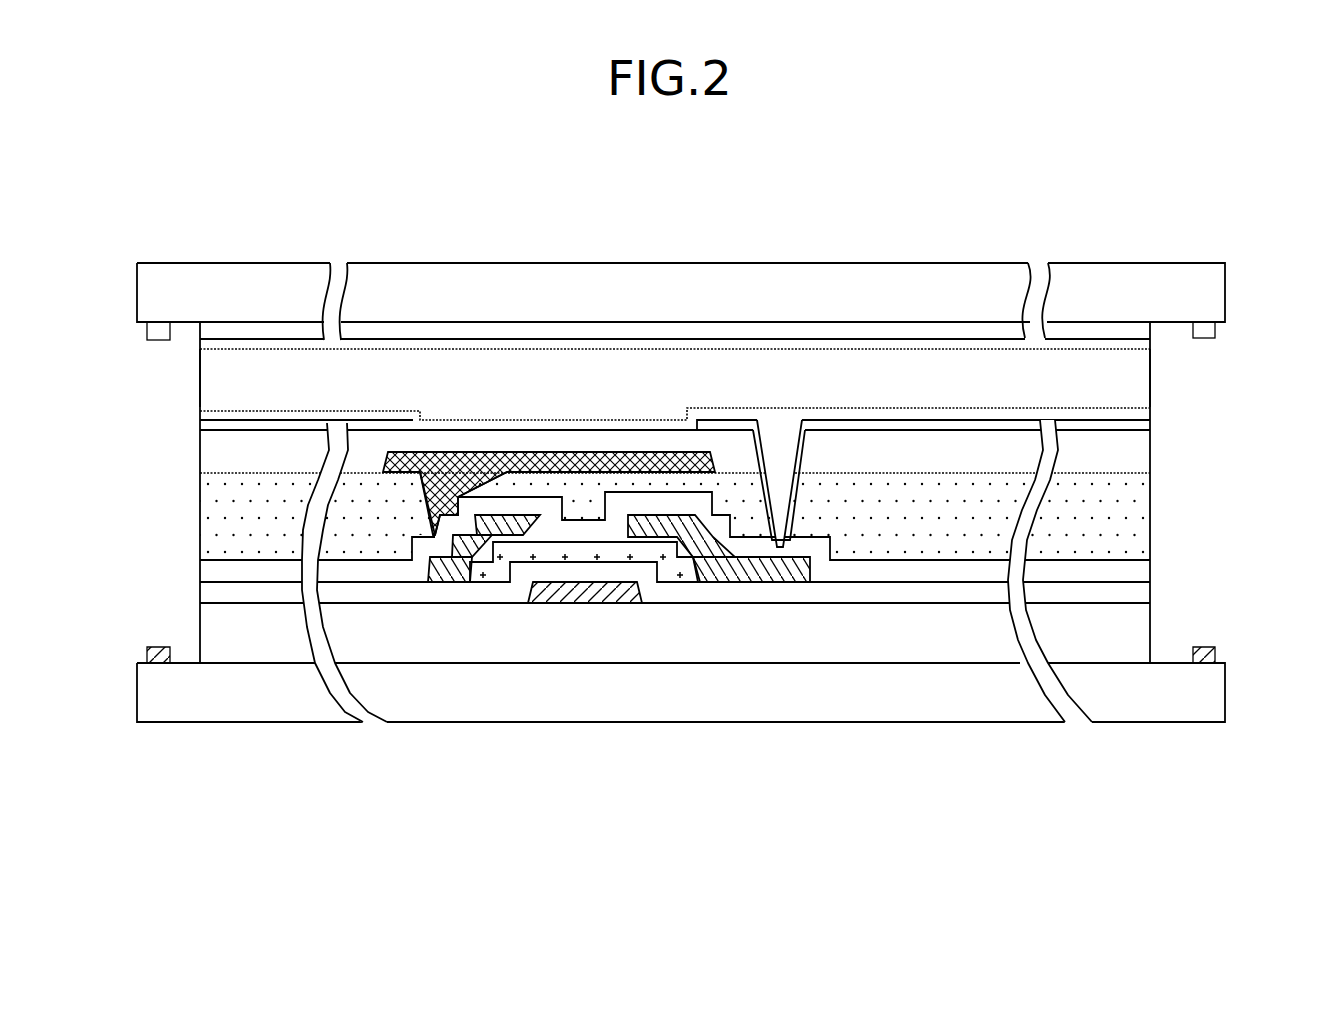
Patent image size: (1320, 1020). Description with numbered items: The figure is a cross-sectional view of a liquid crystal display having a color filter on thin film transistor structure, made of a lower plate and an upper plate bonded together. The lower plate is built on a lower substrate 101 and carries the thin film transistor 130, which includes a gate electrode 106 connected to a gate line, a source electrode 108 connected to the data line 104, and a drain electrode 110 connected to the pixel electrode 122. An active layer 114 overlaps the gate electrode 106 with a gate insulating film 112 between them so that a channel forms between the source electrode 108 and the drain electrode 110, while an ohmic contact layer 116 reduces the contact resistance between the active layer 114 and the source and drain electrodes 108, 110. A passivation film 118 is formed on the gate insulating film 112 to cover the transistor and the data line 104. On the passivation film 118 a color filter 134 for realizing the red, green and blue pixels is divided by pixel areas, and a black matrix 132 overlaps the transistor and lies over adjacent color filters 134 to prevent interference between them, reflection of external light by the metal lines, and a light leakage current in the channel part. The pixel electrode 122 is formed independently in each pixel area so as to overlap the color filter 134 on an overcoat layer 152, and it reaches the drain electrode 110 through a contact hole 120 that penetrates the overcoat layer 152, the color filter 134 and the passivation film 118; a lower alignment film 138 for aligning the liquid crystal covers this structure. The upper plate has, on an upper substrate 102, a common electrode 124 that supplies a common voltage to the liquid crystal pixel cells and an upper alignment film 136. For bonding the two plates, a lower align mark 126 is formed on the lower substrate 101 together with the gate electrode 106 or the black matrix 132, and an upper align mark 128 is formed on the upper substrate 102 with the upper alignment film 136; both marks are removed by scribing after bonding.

The lower substrate 101 is at (1216, 696).
The upper substrate 102 is at (1227, 291).
The data line 104 is at (450, 573).
The gate electrode 106 is at (602, 603).
The source electrode 108 is at (530, 537).
The drain electrode 110 is at (783, 567).
The gate insulating film 112 is at (1152, 592).
The active layer 114 is at (670, 570).
The ohmic contact layer 116 is at (702, 583).
The passivation film 118 is at (1152, 565).
The contact hole 120 is at (777, 437).
The pixel electrode 122 is at (1152, 428).
The common electrode 124 is at (1092, 327).
The lower align mark 126 is at (1216, 653).
The upper align mark 128 is at (1216, 331).
The thin film transistor 130 is at (1152, 380).
The black matrix 132 is at (447, 490).
The color filter 134 is at (272, 495).
The upper alignment film 136 is at (1152, 348).
The lower alignment film 138 is at (1152, 406).
The overcoat layer 152 is at (1152, 456).